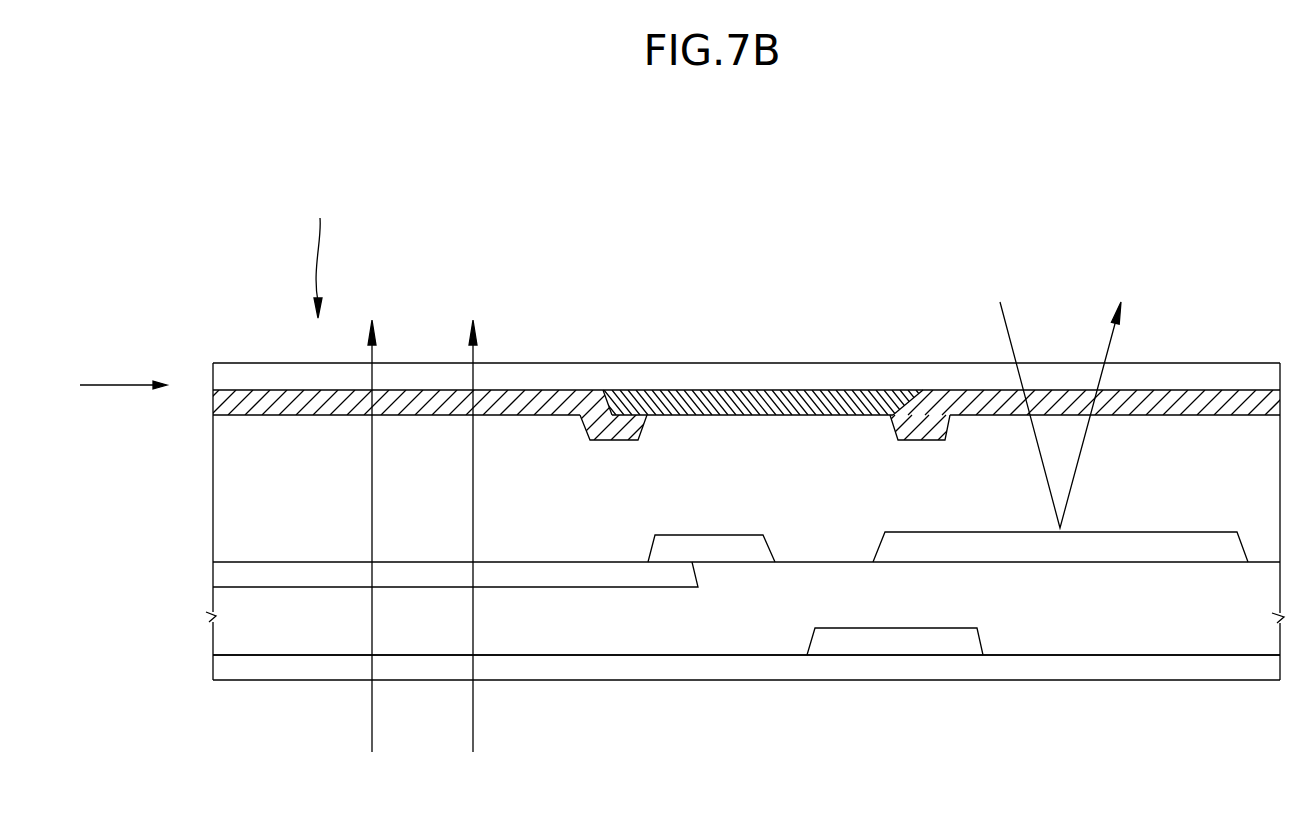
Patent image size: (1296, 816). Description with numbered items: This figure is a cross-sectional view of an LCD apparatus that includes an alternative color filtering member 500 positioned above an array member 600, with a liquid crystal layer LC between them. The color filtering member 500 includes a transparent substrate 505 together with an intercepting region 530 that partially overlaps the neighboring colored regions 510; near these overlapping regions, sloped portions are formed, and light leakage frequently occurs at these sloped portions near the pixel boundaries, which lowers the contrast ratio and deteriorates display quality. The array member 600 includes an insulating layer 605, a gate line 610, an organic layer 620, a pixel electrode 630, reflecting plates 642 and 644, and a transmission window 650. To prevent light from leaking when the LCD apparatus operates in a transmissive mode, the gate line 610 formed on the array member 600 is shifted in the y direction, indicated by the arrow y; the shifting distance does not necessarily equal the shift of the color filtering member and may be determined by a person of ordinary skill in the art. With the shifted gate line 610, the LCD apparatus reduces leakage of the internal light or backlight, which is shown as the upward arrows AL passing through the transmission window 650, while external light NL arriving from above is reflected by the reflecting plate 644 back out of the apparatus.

The color filtering member 500 is at (725, 316).
The transparent substrate 505 is at (697, 372).
The colored regions 510 is at (585, 400).
The intercepting region 530 is at (612, 228).
The array member 600 is at (746, 655).
The insulating layer 605 is at (820, 665).
The gate line 610 is at (910, 645).
The organic layer 620 is at (567, 640).
The pixel electrode 630 is at (667, 577).
The reflecting plate 642 is at (735, 548).
The reflecting plate 644 is at (1060, 633).
The transmission window 650 is at (318, 253).
The liquid crystal layer LC is at (228, 505).
The artificial light AL is at (422, 556).
The natural light NL is at (1053, 402).
The y-direction y is at (134, 387).